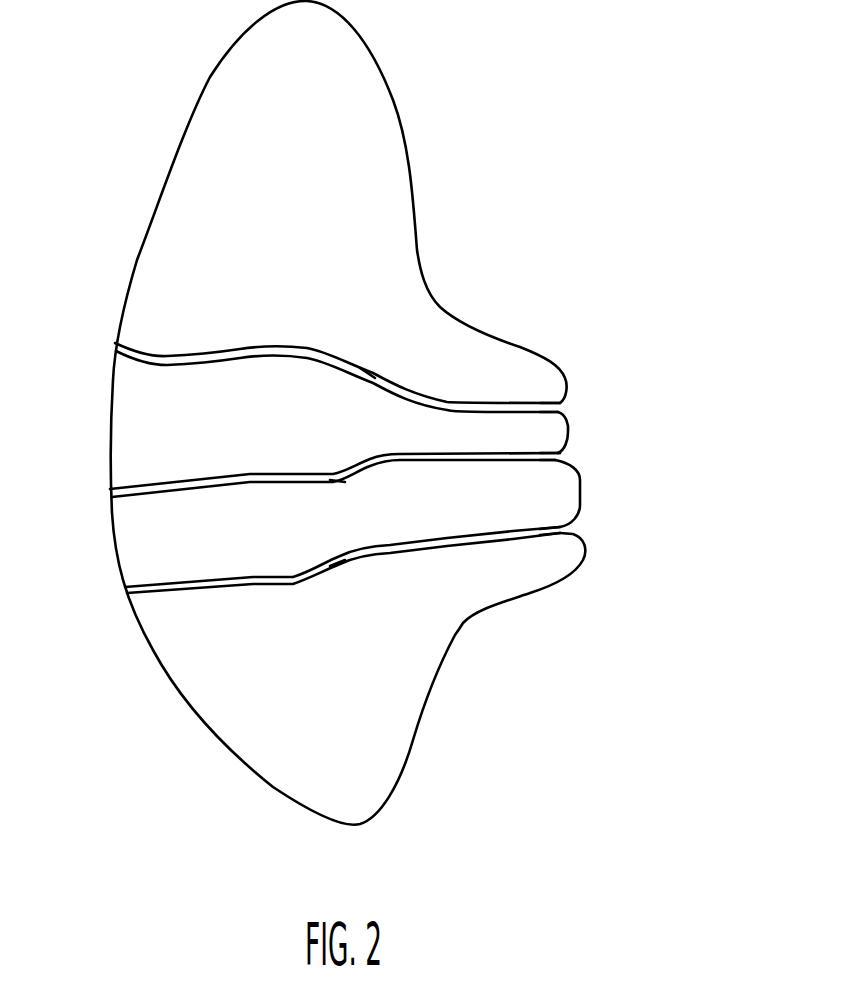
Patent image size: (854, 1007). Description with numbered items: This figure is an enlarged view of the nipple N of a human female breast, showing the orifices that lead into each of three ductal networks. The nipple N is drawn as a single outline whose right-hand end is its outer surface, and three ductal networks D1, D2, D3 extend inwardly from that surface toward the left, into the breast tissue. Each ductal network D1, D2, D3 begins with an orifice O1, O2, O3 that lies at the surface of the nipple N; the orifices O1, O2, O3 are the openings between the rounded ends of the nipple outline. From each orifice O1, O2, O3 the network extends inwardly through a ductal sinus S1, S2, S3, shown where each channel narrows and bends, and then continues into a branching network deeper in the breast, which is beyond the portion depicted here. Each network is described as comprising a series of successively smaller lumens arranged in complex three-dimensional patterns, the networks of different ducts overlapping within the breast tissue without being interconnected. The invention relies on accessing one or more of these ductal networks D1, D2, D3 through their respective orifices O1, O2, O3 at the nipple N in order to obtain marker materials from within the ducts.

The nipple N is at (682, 472).
The first ductal network D1 is at (140, 593).
The second ductal network D2 is at (133, 491).
The third ductal network D3 is at (147, 359).
The first ductal sinus S1 is at (333, 565).
The second ductal sinus S2 is at (333, 482).
The third ductal sinus S3 is at (367, 376).
The first orifice O1 is at (562, 527).
The second orifice O2 is at (563, 453).
The third orifice O3 is at (562, 408).